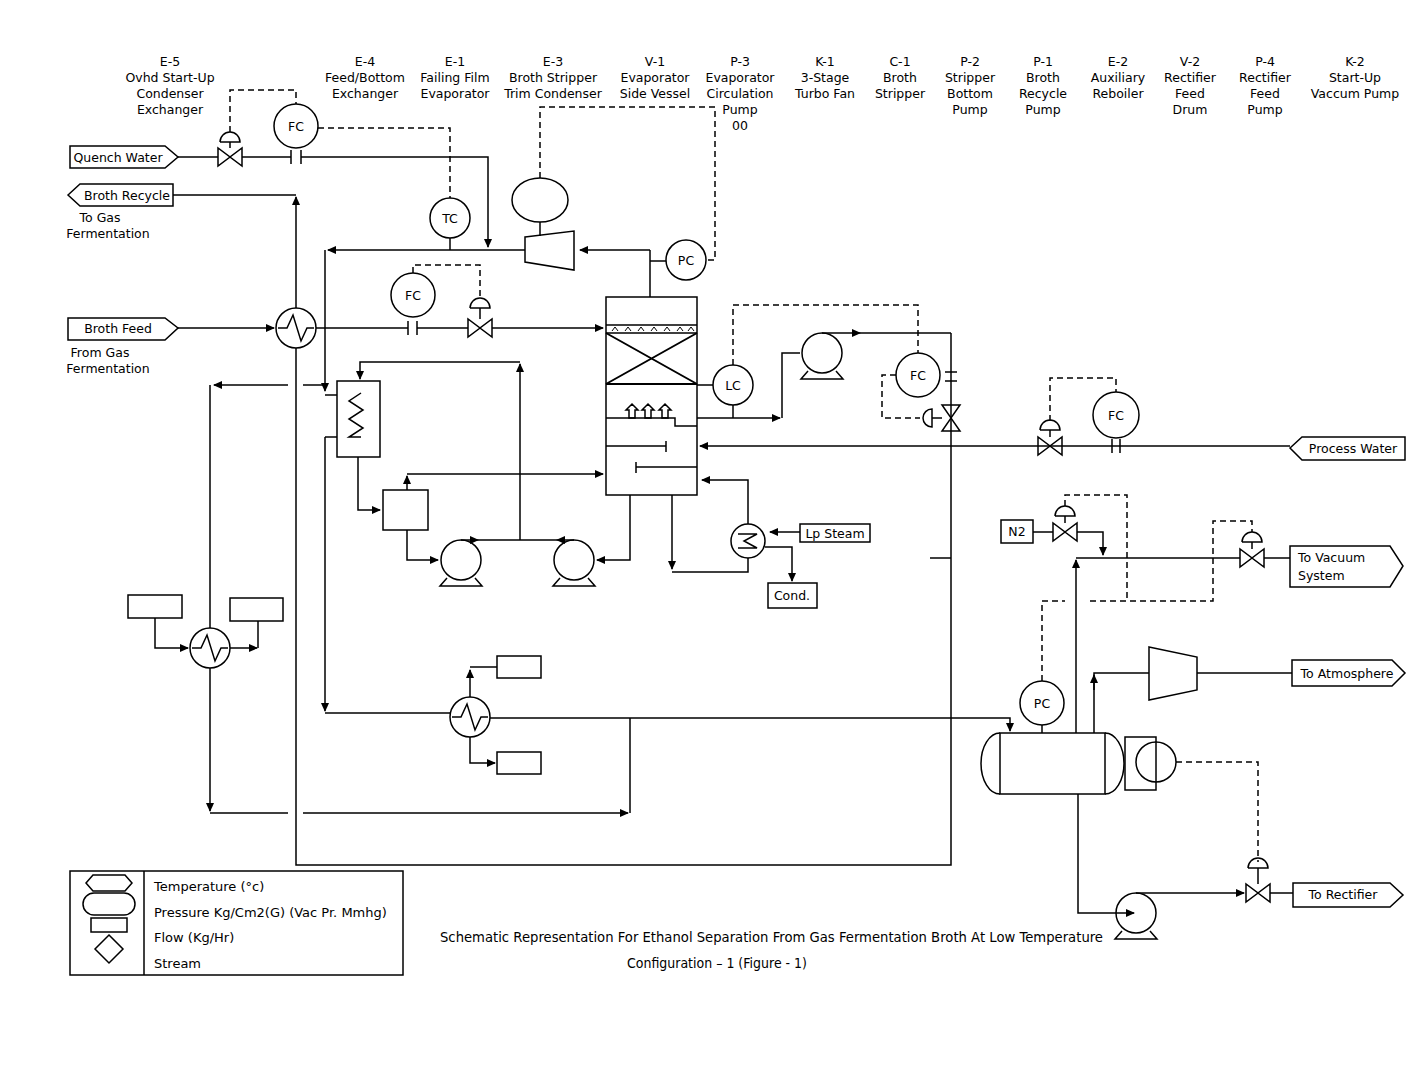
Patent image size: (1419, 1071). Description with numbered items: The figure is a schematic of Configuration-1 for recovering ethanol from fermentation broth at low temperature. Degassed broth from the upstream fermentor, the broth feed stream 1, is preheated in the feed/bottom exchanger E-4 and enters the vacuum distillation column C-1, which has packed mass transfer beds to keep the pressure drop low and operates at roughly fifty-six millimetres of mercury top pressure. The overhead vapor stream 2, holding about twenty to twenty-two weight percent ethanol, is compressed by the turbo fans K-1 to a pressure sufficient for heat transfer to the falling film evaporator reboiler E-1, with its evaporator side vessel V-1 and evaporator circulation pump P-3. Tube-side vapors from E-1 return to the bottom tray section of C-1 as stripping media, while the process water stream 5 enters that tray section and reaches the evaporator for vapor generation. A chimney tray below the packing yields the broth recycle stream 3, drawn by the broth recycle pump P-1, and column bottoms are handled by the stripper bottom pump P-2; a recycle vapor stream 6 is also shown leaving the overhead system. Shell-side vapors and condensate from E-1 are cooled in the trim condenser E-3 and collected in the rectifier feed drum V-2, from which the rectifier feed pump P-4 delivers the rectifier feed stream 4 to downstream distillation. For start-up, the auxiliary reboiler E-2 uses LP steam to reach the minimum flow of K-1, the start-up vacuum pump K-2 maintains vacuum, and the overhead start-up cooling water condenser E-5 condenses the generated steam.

The falling film evaporator reboiler E-1 is at (422, 451).
The auxiliary reboiler E-2 is at (736, 552).
The trim condenser E-3 is at (674, 715).
The feed/bottom exchanger E-4 is at (570, 586).
The overhead start-up cooling water condenser E-5 is at (194, 598).
The evaporator side vessel V-1 is at (475, 543).
The rectifier feed drum V-2 is at (1119, 823).
The broth recycle pump P-1 is at (824, 382).
The stripper bottom pump P-2 is at (578, 565).
The evaporator circulation pump P-3 is at (463, 589).
The rectifier feed pump P-4 is at (1204, 907).
The turbo fans K-1 is at (613, 212).
The start-up vacuum pump K-2 is at (1197, 696).
The vacuum distillation column C-1 is at (620, 372).
The broth feed stream 1 is at (192, 215).
The overhead vapor stream 2 is at (593, 138).
The broth recycle stream 3 is at (875, 470).
The rectifier feed stream 4 is at (1176, 784).
The process water stream 5 is at (1188, 335).
The recycle vapor stream 6 is at (357, 207).